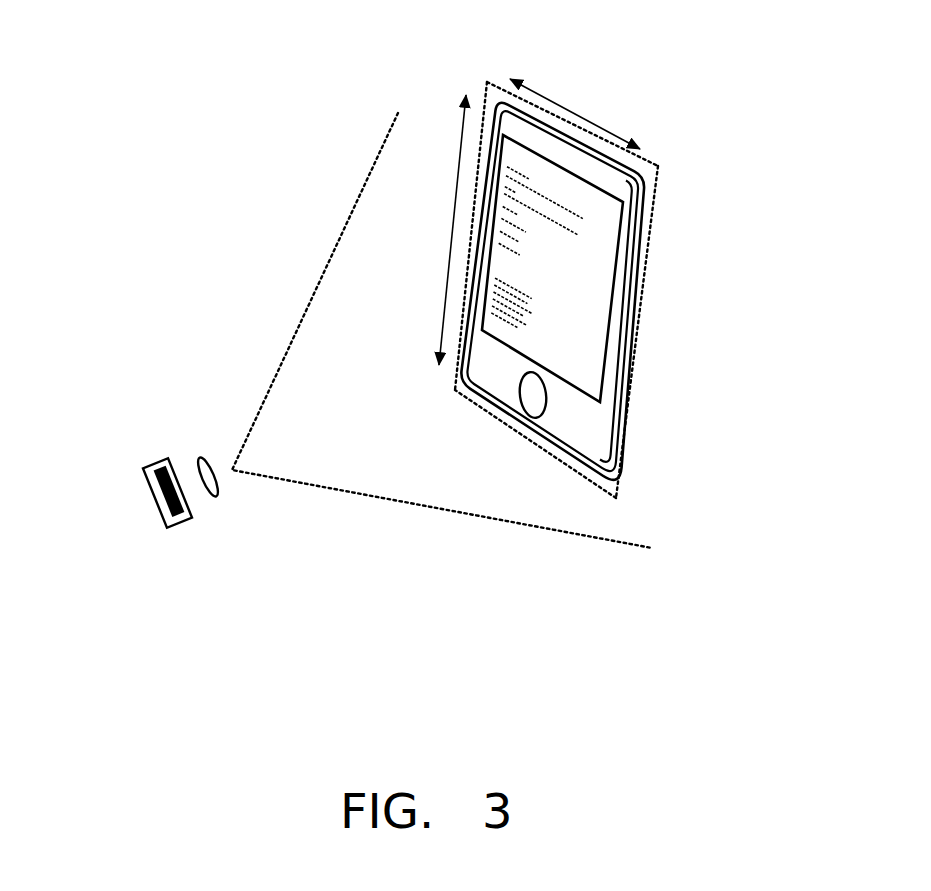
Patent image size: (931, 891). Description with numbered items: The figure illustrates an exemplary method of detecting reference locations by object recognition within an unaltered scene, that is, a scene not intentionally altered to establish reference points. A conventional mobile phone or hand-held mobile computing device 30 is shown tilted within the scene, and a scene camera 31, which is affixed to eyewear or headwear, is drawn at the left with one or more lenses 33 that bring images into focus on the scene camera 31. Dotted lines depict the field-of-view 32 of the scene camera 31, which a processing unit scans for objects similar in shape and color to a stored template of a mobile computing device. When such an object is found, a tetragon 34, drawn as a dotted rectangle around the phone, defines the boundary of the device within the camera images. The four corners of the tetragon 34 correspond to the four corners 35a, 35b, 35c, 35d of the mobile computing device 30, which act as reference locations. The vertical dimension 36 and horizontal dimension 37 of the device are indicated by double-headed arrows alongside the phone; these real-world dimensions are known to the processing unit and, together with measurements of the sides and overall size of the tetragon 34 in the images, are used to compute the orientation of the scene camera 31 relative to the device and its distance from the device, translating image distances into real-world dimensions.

The mobile computing device 30 is at (589, 312).
The scene camera 31 is at (167, 537).
The field-of-view 32 is at (342, 210).
The lens 33 is at (200, 448).
The tetragon 34 is at (634, 400).
The corner of the mobile computing device 35a is at (486, 77).
The corner of the mobile computing device 35b is at (658, 160).
The corner of the mobile computing device 35c is at (613, 503).
The corner of the mobile computing device 35d is at (450, 400).
The vertical dimension 36 is at (441, 227).
The horizontal dimension 37 is at (579, 109).